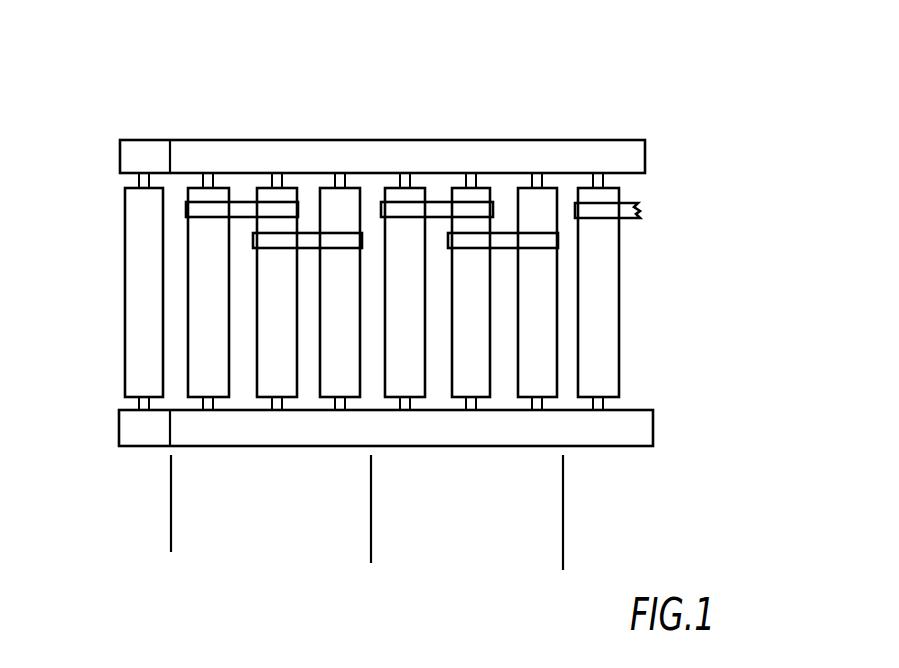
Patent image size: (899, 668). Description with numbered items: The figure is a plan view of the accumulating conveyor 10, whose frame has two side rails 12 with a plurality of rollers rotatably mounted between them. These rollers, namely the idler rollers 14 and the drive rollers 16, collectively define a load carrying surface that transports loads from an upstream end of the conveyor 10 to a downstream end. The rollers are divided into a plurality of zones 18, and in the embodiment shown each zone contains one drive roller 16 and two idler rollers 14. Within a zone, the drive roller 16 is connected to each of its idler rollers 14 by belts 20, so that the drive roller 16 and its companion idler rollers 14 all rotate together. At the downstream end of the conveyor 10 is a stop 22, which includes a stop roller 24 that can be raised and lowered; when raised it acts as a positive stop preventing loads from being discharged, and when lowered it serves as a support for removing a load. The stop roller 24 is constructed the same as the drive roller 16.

The accumulating conveyor 10 is at (622, 77).
The side rails 12 is at (432, 433).
The idler rollers 14 is at (223, 362).
The drive roller 16 is at (292, 362).
The zones 18 is at (203, 590).
The belts 20 is at (250, 208).
The stop 22 is at (100, 247).
The stop roller 24 is at (157, 362).